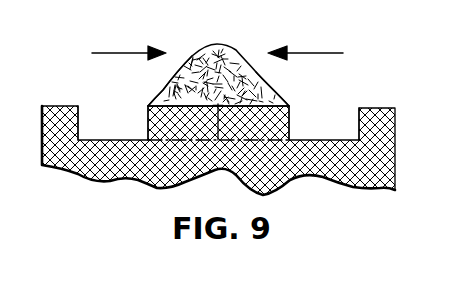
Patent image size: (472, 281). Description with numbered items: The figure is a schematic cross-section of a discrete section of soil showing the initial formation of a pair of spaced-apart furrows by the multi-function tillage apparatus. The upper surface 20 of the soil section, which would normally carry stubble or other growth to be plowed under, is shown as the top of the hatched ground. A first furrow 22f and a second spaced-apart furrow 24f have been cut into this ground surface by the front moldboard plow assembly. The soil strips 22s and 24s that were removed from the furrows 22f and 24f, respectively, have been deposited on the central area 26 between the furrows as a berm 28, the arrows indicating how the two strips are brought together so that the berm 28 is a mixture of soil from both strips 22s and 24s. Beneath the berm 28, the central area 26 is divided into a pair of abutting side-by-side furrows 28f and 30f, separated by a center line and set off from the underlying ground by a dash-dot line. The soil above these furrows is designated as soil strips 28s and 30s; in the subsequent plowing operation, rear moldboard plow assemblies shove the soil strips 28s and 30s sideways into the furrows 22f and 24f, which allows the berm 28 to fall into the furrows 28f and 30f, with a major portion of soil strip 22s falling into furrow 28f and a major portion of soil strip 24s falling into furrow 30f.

The upper surface 20 is at (391, 107).
The first furrow 22f is at (93, 139).
The soil strip 22s is at (159, 93).
The second spaced-apart furrow 24f is at (338, 139).
The soil strip 24s is at (277, 93).
The central area 26 is at (234, 183).
The berm 28 is at (222, 15).
The soil strip 28s is at (148, 107).
The furrow 28f is at (168, 143).
The soil strip 30s is at (289, 125).
The furrow 30f is at (256, 143).